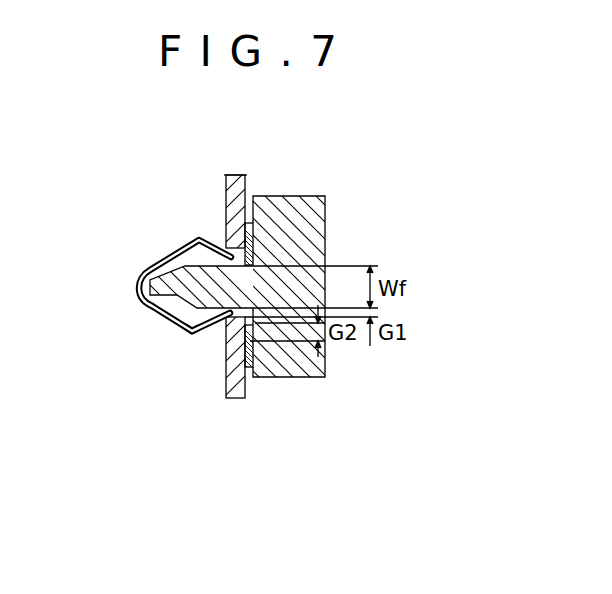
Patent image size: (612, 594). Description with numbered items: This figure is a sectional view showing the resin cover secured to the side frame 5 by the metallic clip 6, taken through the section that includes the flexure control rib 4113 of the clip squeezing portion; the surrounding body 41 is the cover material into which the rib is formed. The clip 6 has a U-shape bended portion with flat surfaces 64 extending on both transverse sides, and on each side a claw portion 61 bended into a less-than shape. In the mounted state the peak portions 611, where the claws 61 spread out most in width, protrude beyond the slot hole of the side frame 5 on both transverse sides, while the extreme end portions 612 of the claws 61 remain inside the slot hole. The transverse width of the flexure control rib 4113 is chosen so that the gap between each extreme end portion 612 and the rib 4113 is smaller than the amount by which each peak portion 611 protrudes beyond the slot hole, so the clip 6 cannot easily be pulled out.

The side frame 5 is at (232, 398).
The clip 6 is at (154, 324).
The claw portion 61 is at (170, 318).
The peak portion 611 is at (198, 338).
The extreme end portion 612 is at (225, 328).
The flat surface 64 is at (262, 197).
The body 41 is at (311, 197).
The flexure control rib 4113 is at (188, 262).